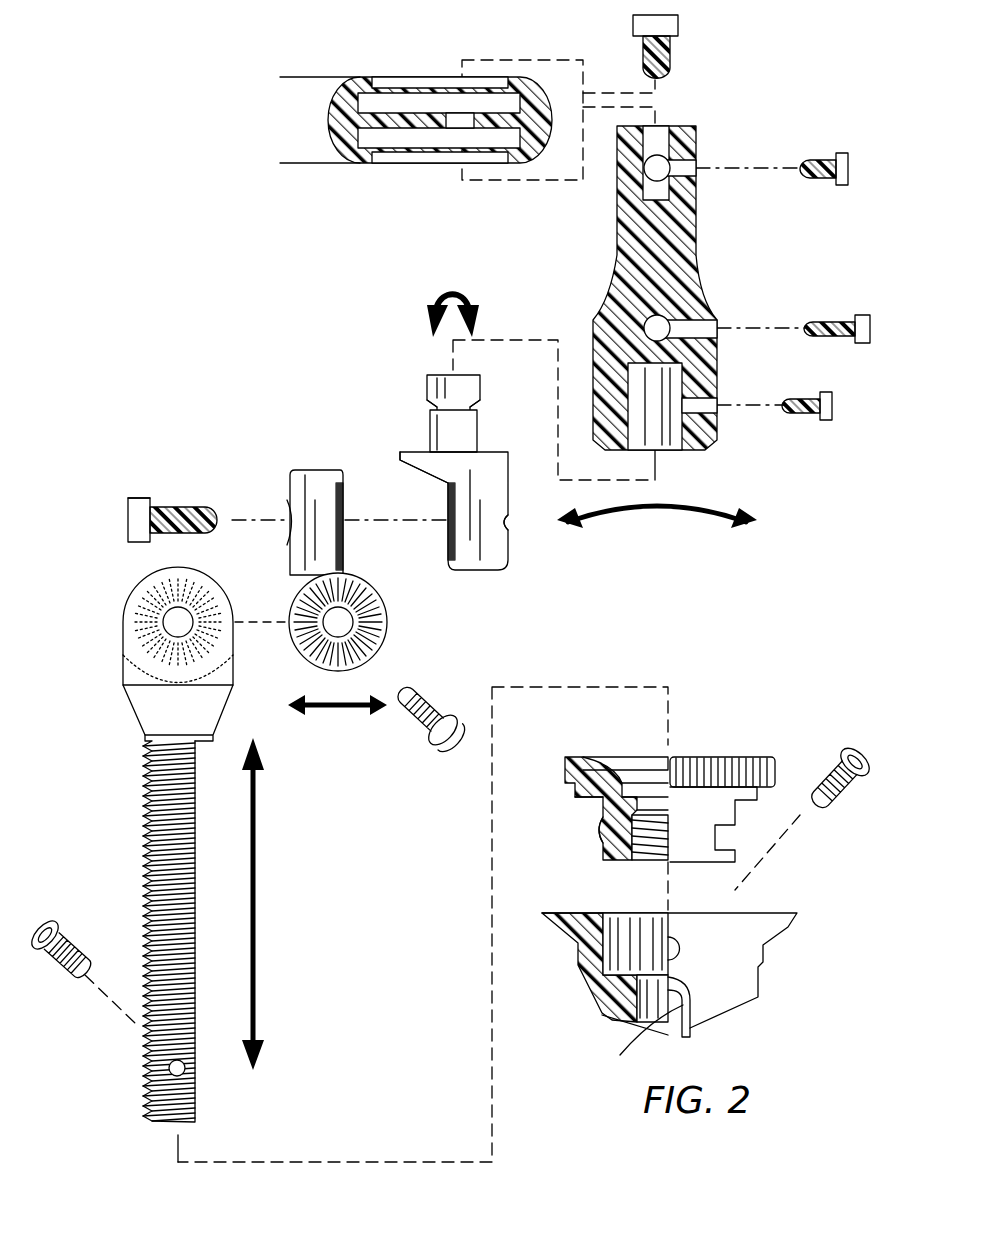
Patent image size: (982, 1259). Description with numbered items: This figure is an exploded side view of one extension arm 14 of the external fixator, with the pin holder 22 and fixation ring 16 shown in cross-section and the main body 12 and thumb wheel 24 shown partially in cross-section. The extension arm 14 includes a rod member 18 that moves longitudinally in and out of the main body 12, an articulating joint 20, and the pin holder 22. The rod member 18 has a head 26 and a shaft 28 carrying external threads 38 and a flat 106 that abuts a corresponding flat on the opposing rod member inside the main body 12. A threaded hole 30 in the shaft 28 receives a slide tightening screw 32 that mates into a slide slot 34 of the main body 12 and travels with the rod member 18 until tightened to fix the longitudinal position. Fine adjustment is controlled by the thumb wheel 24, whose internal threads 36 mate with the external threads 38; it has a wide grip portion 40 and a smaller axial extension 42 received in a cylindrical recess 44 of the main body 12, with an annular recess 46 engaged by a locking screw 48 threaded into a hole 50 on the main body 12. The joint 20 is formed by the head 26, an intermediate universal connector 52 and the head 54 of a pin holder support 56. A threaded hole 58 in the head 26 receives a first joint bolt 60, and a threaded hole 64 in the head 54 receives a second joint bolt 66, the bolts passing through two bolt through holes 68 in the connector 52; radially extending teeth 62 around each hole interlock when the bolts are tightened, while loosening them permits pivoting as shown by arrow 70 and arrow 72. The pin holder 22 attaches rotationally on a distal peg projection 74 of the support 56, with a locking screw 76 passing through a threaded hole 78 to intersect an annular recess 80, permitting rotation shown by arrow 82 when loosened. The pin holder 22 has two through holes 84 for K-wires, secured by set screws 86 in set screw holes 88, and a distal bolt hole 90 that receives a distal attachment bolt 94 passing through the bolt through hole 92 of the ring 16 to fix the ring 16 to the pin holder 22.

The main body 12 is at (644, 966).
The extension arm 14 is at (203, 365).
The fixation ring 16 is at (425, 87).
The rod member 18 is at (156, 922).
The articulating joint 20 is at (205, 475).
The pin holder 22 is at (656, 263).
The thumb wheel 24 is at (634, 770).
The head 26 is at (137, 654).
The shaft 28 is at (137, 922).
The threaded hole 30 is at (183, 1074).
The slide tightening screw 32 is at (55, 918).
The slide slot 34 is at (637, 1042).
The internal threads 36 is at (640, 860).
The external threads 38 is at (143, 920).
The grip portion 40 is at (565, 770).
The axial extension 42 is at (595, 815).
The cylindrical recess 44 is at (635, 915).
The annular recess 46 is at (603, 830).
The locking screw 48 is at (858, 745).
The hole 50 is at (682, 948).
The intermediate universal connector 52 is at (305, 470).
The head 54 is at (505, 560).
The pin holder support 56 is at (455, 491).
The threaded hole 58 is at (160, 635).
The first joint bolt 60 is at (430, 690).
The radially extending teeth 62 is at (130, 595).
The threaded hole 64 is at (508, 512).
The second joint bolt 66 is at (175, 505).
The bolt through holes 68 is at (292, 640).
The arrow 70 is at (340, 712).
The arrow 72 is at (437, 292).
The distal peg projection 74 is at (454, 394).
The locking screw 76 is at (805, 415).
The threaded hole 78 is at (717, 405).
The annular recess 80 is at (477, 405).
The arrow 82 is at (665, 512).
The through holes 84 is at (650, 340).
The set screws 86 is at (848, 315).
The set screw holes 88 is at (700, 320).
The distal bolt hole 90 is at (665, 125).
The bolt through hole 92 is at (462, 105).
The distal attachment bolt 94 is at (672, 58).
The flat 106 is at (195, 935).